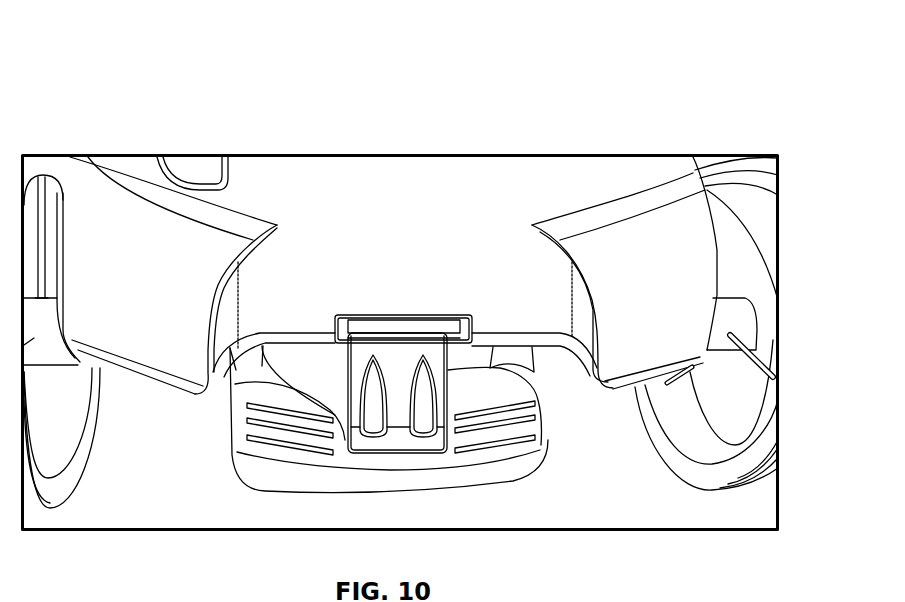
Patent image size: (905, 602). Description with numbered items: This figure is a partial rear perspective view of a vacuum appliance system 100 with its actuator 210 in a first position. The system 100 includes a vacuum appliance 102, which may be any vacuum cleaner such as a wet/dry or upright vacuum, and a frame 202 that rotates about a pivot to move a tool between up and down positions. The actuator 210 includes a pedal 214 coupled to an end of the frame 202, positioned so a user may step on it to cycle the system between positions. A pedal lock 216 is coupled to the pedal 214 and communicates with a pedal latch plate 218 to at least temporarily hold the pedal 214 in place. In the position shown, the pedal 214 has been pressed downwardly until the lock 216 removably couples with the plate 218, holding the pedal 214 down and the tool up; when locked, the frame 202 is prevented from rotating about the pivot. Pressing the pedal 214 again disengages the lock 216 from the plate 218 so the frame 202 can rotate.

The vacuum appliance system 100 is at (105, 62).
The vacuum appliance 102 is at (693, 288).
The frame 202 is at (513, 363).
The actuator 210 is at (207, 423).
The pedal 214 is at (503, 470).
The pedal lock 216 is at (492, 369).
The pedal latch plate 218 is at (382, 325).